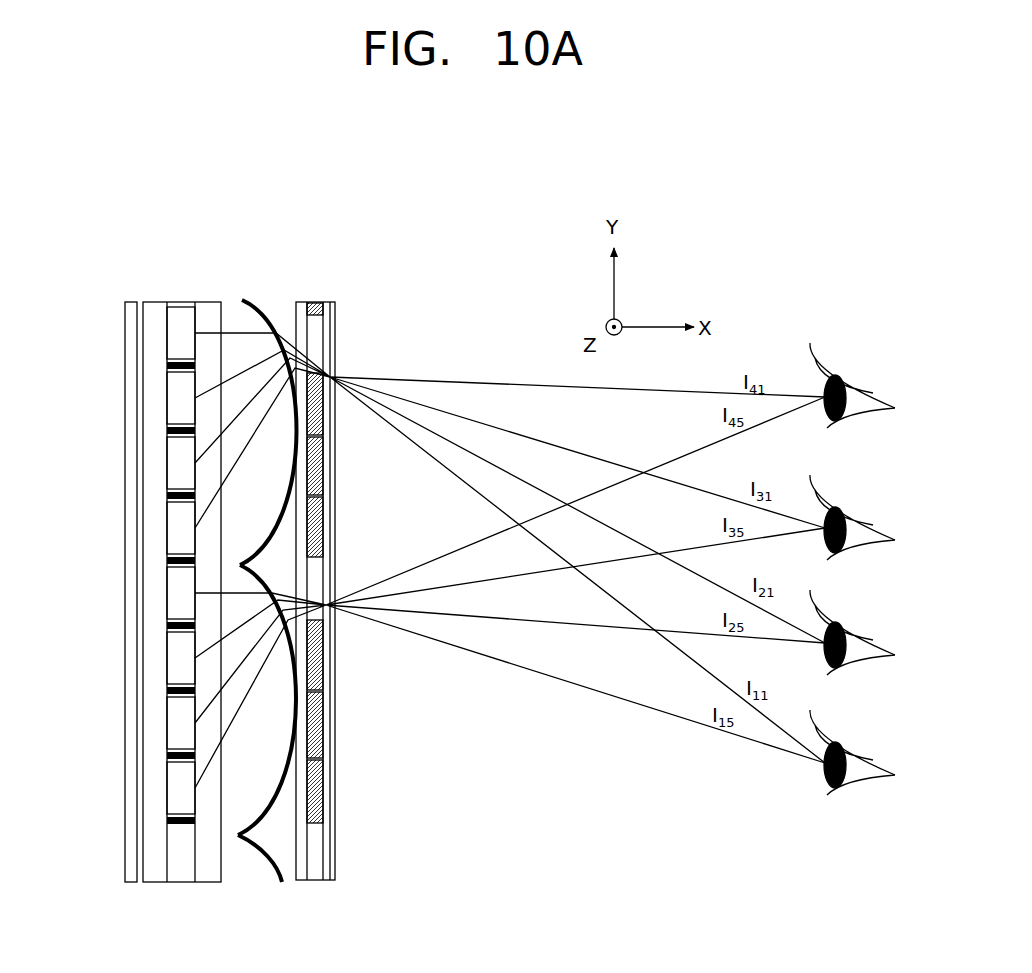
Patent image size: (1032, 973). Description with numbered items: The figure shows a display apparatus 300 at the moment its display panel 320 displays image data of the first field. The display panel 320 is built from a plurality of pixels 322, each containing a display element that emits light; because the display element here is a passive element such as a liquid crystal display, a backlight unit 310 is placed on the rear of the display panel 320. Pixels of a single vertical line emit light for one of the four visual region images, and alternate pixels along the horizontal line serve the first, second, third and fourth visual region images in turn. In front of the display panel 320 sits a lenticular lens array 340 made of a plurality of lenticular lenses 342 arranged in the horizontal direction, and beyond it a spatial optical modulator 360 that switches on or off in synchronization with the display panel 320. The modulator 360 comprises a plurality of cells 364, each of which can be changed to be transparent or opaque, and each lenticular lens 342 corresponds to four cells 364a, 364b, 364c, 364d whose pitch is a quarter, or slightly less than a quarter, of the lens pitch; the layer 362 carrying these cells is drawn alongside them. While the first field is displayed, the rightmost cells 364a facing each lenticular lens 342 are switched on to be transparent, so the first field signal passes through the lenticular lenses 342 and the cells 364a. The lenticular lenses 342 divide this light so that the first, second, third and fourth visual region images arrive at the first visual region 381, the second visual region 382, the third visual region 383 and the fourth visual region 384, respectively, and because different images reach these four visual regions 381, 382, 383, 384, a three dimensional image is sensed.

The display apparatus 300 is at (100, 278).
The backlight unit 310 is at (129, 884).
The display panel 320 is at (218, 294).
The pixel 322 is at (172, 333).
The lenticular lens array 340 is at (281, 565).
The lenticular lens 342 is at (283, 308).
The spatial optical modulator 360 is at (385, 583).
The substrate 362 is at (319, 882).
The cell 364 is at (391, 563).
The rightmost cell 364a is at (335, 382).
The cell 364b is at (328, 436).
The cell 364c is at (328, 480).
The cell 364d is at (316, 527).
The first visual region 381 is at (858, 767).
The second visual region 382 is at (858, 647).
The third visual region 383 is at (858, 532).
The fourth visual region 384 is at (858, 400).